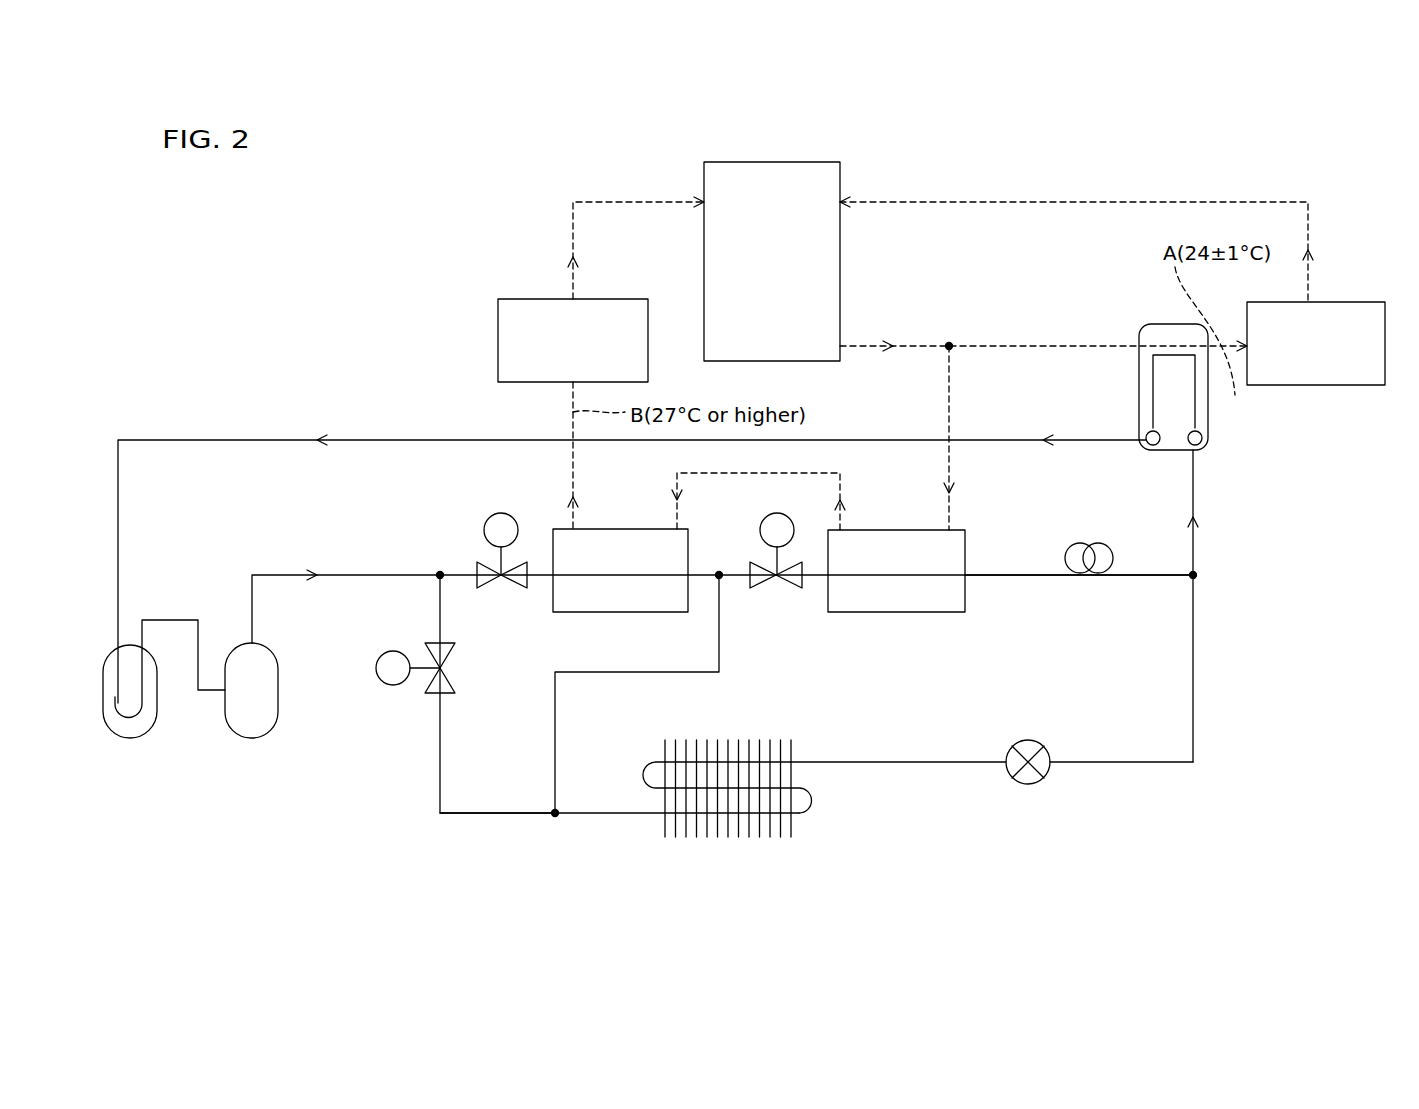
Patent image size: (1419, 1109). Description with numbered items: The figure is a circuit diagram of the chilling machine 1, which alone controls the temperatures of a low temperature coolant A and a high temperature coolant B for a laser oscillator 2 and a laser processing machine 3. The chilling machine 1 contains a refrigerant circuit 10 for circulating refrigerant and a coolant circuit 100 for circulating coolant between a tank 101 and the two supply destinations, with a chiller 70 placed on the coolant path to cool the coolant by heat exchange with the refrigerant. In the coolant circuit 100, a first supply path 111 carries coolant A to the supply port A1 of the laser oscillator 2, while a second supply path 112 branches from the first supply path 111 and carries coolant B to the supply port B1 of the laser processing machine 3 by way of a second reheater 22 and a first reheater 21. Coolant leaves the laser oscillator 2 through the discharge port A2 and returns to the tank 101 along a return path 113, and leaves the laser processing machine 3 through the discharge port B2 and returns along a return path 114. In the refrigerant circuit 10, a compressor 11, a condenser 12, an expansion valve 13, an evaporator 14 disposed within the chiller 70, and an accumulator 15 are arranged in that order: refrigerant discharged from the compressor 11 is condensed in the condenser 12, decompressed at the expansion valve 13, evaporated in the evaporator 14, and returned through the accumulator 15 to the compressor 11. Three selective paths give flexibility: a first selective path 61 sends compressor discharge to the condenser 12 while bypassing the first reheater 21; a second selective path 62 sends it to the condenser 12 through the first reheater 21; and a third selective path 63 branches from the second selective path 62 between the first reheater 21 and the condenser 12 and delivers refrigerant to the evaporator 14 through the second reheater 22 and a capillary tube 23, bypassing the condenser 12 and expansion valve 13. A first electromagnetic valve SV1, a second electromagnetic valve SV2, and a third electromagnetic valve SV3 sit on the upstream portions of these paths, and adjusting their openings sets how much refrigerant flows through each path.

The chilling machine 1 is at (377, 300).
The laser oscillator 2 is at (1330, 302).
The laser processing machine 3 is at (520, 299).
The refrigerant circuit 10 is at (450, 826).
The compressor 11 is at (268, 730).
The condenser 12 is at (660, 838).
The expansion valve 13 is at (1030, 784).
The evaporator 14 is at (1200, 418).
The accumulator 15 is at (135, 738).
The first reheater 21 is at (622, 529).
The second reheater 22 is at (897, 612).
The capillary tube 23 is at (1078, 545).
The first selective path 61 is at (440, 757).
The second selective path 62 is at (555, 735).
The third selective path 63 is at (1013, 576).
The chiller 70 is at (1210, 448).
The coolant circuit 100 is at (1113, 185).
The tank 101 is at (820, 162).
The first supply path 111 is at (1095, 346).
The second supply path 112 is at (949, 392).
The return path 113 is at (1002, 202).
The return path 114 is at (620, 202).
The first electromagnetic valve SV1 is at (413, 657).
The second electromagnetic valve SV2 is at (502, 538).
The third electromagnetic valve SV3 is at (777, 537).
The supply port A1 is at (1238, 405).
The discharge port A2 is at (1305, 284).
The supply port B1 is at (573, 400).
The discharge port B2 is at (573, 282).